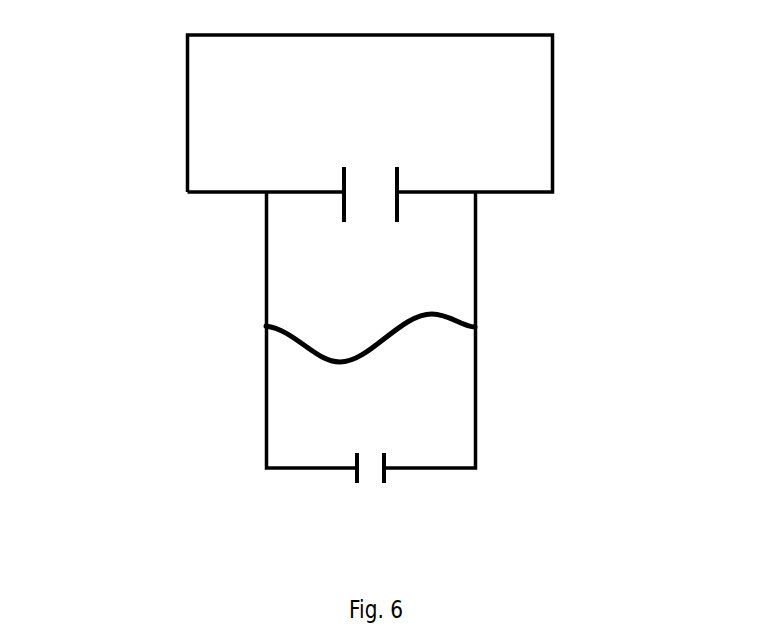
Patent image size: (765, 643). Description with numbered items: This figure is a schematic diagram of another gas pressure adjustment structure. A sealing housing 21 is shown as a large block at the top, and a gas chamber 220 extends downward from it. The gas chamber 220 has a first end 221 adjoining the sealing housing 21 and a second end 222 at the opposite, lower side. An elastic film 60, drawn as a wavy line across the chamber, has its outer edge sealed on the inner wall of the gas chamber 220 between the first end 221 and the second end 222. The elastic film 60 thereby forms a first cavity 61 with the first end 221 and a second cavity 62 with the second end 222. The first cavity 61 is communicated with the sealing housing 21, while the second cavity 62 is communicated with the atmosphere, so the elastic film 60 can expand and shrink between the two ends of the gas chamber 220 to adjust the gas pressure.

The sealing housing 21 is at (449, 142).
The first end 221 is at (435, 193).
The gas chamber 220 is at (477, 272).
The second end 222 is at (440, 470).
The elastic film 60 is at (288, 342).
The first cavity 61 is at (318, 273).
The second cavity 62 is at (318, 430).